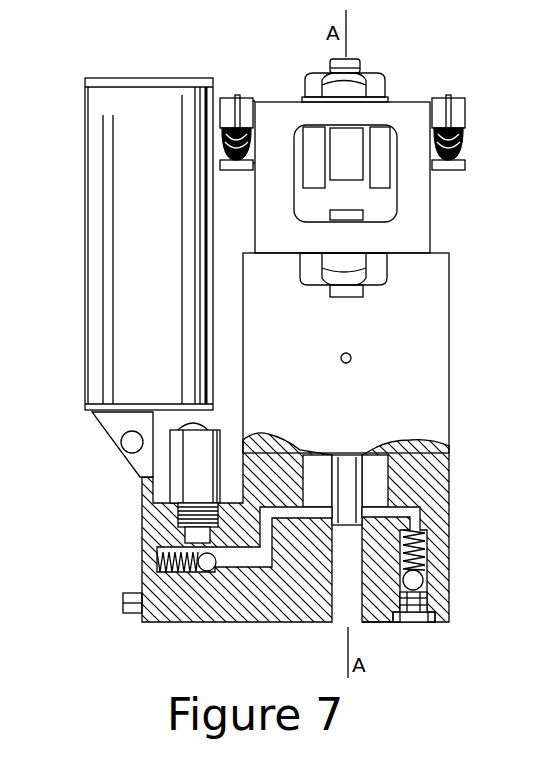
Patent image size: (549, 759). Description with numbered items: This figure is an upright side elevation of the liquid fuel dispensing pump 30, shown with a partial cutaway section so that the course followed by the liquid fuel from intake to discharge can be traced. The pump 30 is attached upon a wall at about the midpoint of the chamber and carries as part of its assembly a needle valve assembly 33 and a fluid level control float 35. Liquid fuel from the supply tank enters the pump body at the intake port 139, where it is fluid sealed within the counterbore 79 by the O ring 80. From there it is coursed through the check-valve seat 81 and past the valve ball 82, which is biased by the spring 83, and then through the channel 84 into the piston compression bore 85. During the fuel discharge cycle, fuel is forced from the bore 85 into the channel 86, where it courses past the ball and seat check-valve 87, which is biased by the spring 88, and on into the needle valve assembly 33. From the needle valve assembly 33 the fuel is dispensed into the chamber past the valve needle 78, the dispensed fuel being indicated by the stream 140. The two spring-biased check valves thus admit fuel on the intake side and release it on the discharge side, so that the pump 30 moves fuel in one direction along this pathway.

The liquid fuel dispensing pump 30 is at (407, 287).
The needle valve assembly 33 is at (187, 477).
The fluid level control float 35 is at (123, 105).
The valve needle 78 is at (175, 422).
The counterbore 79 is at (407, 627).
The O ring 80 is at (430, 625).
The check-valve seat 81 is at (420, 608).
The valve ball 82 is at (423, 585).
The spring 83 is at (420, 558).
The channel 84 is at (408, 510).
The piston compression bore 85 is at (380, 470).
The channel 86 is at (283, 605).
The ball and seat check-valve 87 is at (207, 573).
The spring 88 is at (157, 565).
The intake port 139 is at (420, 625).
The stream 140 is at (93, 408).